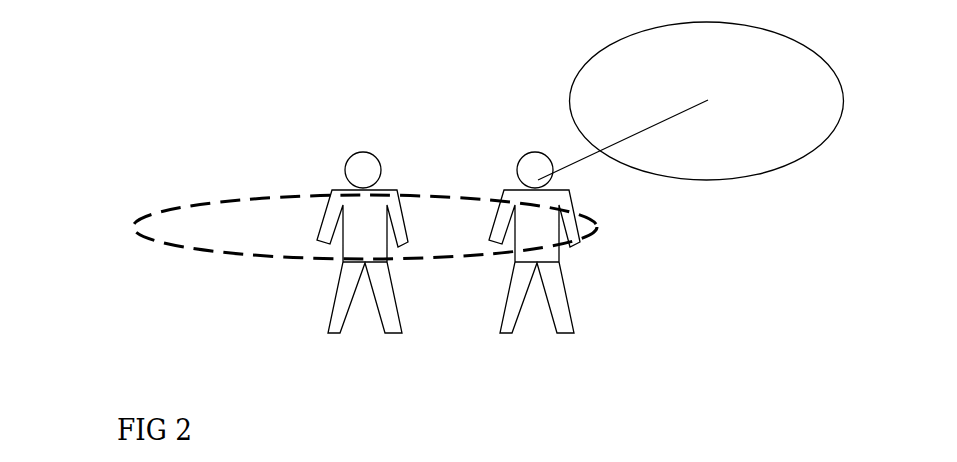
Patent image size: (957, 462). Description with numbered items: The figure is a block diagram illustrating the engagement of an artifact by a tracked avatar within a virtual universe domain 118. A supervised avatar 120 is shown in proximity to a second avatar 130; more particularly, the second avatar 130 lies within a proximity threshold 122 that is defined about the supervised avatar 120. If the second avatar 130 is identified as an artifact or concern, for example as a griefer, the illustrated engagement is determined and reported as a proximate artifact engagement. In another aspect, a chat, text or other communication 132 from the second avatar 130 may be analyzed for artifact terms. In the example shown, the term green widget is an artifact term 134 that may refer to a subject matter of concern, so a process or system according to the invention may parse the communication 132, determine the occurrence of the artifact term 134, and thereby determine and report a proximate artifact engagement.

The virtual universe domain 118 is at (133, 340).
The supervised avatar 120 is at (335, 332).
The proximity threshold 122 is at (180, 247).
The second avatar 130 is at (507, 331).
The communication 132 is at (595, 62).
The artifact term 134 is at (752, 102).